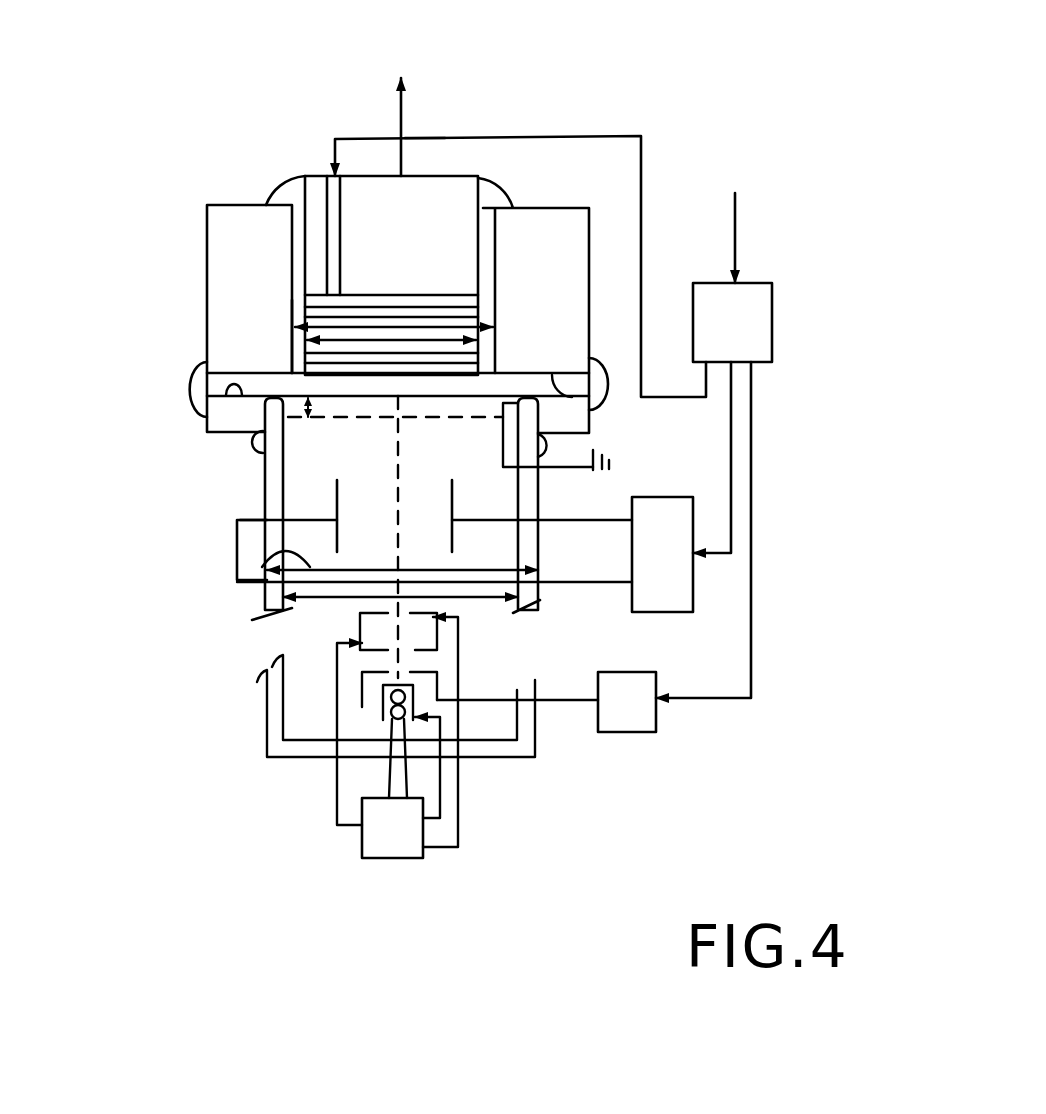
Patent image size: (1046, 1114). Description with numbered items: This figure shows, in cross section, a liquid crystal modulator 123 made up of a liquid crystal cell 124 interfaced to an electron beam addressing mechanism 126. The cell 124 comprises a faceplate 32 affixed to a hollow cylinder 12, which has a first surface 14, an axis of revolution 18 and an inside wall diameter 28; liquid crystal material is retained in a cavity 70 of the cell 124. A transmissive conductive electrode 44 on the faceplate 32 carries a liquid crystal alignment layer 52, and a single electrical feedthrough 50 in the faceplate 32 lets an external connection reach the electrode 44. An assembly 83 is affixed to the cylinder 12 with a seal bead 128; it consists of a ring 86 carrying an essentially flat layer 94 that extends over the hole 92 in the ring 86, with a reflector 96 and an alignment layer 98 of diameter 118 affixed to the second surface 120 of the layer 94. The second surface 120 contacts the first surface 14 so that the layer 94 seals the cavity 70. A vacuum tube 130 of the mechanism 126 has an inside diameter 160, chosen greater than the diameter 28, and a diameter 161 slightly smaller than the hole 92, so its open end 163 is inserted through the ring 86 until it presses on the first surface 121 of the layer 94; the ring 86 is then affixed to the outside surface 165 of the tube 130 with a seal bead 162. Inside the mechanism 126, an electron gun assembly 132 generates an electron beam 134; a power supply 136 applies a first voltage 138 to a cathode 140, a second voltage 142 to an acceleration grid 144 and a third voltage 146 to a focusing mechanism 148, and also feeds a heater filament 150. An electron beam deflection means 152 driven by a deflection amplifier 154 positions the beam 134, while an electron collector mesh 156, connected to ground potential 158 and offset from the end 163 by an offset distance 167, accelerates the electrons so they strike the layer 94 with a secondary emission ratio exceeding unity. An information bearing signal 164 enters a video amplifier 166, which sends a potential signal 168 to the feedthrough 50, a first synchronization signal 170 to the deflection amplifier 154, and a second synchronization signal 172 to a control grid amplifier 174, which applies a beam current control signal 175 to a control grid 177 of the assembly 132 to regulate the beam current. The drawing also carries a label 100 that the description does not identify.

The hollow cylinder 12 is at (257, 213).
The first surface 14 is at (598, 400).
The axis of revolution 18 is at (397, 127).
The inside wall diameter 28 is at (392, 328).
The faceplate 32 is at (420, 210).
The transmissive conductive electrode 44 is at (290, 300).
The electrical feedthrough 50 is at (325, 188).
The liquid crystal alignment layer 52 is at (415, 370).
The cavity 70 is at (483, 360).
The assembly 83 is at (188, 420).
The ring 86 is at (220, 407).
The hole 92 is at (381, 400).
The layer 94 is at (250, 440).
The reflector 96 is at (430, 330).
The alignment layer 98 is at (252, 376).
The lower housing 100 is at (295, 372).
The diameter 118 is at (357, 340).
The second surface 120 is at (283, 372).
The first surface 121 is at (503, 372).
The liquid crystal modulator 123 is at (660, 108).
The liquid crystal cell 124 is at (187, 332).
The electron beam addressing mechanism 126 is at (545, 765).
The seal bead 128 is at (232, 378).
The vacuum tube 130 is at (265, 490).
The electron gun assembly 132 is at (470, 645).
The electron beam 134 is at (352, 617).
The power supply 136 is at (362, 840).
The first voltage 138 is at (445, 803).
The cathode 140 is at (385, 768).
The second voltage 142 is at (330, 806).
The acceleration grid 144 is at (362, 672).
The third voltage 146 is at (445, 848).
The focusing mechanism 148 is at (358, 646).
The heater filament 150 is at (333, 805).
The electron beam deflection means 152 is at (335, 533).
The deflection amplifier 154 is at (697, 585).
The electron collector mesh 156 is at (333, 427).
The ground potential 158 is at (617, 463).
The inside diameter 160 is at (340, 608).
The diameter 161 is at (267, 558).
The seal bead 162 is at (557, 448).
The open end 163 is at (505, 410).
The information bearing signal 164 is at (738, 228).
The outside surface 165 is at (542, 557).
The video amplifier 166 is at (758, 312).
The offset distance 167 is at (265, 428).
The potential signal 168 is at (425, 138).
The first synchronization signal 170 is at (732, 528).
The second synchronization signal 172 is at (750, 392).
The control grid amplifier 174 is at (650, 710).
The beam current control signal 175 is at (577, 700).
The control grid 177 is at (390, 707).